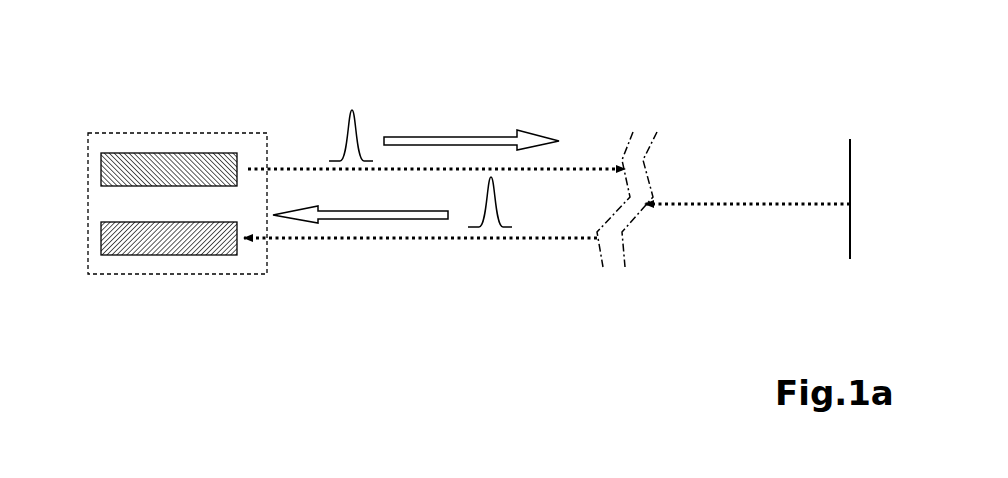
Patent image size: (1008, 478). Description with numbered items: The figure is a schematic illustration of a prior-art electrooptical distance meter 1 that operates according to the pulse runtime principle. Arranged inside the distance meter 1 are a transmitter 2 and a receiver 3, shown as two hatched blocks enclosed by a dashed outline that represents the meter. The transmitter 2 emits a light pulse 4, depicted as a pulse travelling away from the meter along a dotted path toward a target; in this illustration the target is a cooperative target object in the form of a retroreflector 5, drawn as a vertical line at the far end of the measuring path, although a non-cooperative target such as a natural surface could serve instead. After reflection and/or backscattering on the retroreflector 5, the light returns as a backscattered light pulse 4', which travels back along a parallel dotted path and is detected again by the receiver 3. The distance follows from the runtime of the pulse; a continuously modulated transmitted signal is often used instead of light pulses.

The electrooptical distance meter 1 is at (162, 146).
The transmitter 2 is at (200, 113).
The receiver 3 is at (191, 292).
The light pulse 4 is at (436, 103).
The backscattered light pulse 4' is at (426, 269).
The retroreflector 5 is at (747, 163).